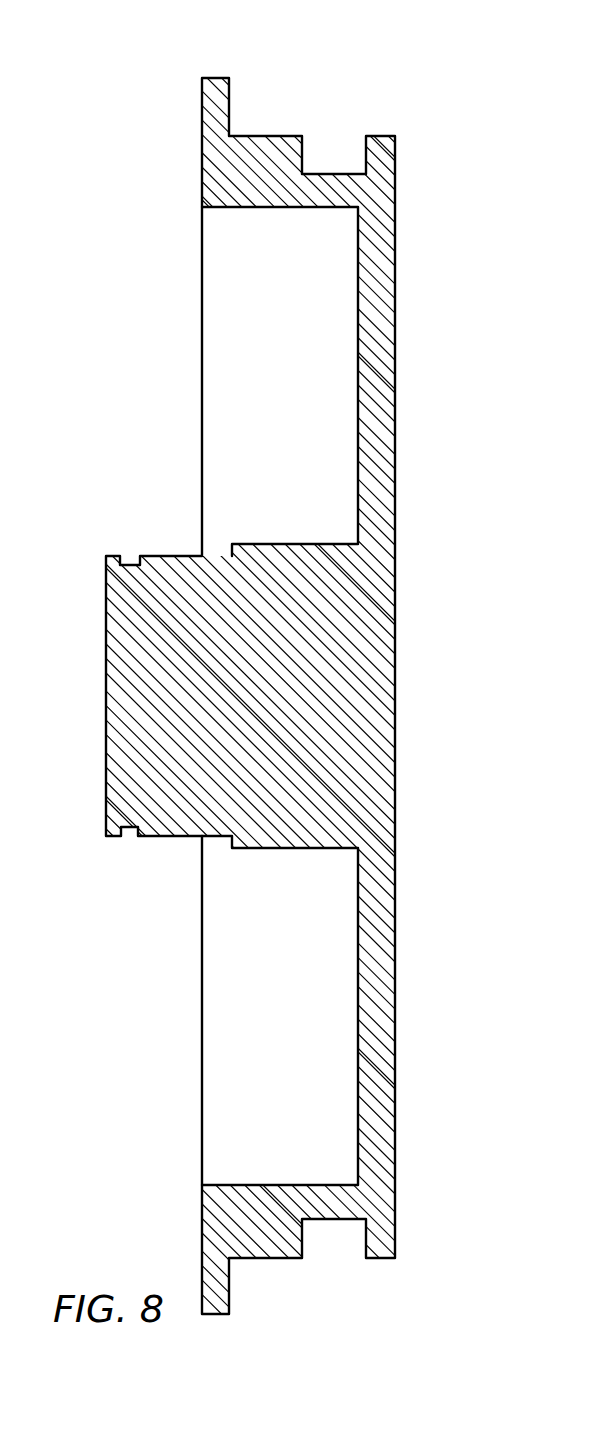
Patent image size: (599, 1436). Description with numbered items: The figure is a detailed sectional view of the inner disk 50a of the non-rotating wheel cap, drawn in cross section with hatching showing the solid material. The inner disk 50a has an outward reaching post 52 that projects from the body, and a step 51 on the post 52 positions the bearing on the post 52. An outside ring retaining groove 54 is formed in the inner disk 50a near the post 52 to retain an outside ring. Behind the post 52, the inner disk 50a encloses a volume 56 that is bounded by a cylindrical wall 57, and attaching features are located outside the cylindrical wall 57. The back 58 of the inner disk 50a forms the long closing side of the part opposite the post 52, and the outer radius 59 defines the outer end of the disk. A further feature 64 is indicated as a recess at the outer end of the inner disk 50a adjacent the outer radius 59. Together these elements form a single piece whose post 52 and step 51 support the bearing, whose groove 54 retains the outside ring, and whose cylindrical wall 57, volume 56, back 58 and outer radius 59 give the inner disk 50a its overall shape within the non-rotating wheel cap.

The inner disk 50a is at (105, 210).
The step 51 is at (232, 843).
The outward reaching post 52 is at (143, 668).
The outside ring retaining groove 54 is at (130, 563).
The volume 56 is at (195, 402).
The cylindrical wall 57 is at (245, 200).
The back 58 is at (377, 350).
The outer radius 59 is at (296, 95).
The annular recess 64 is at (333, 162).